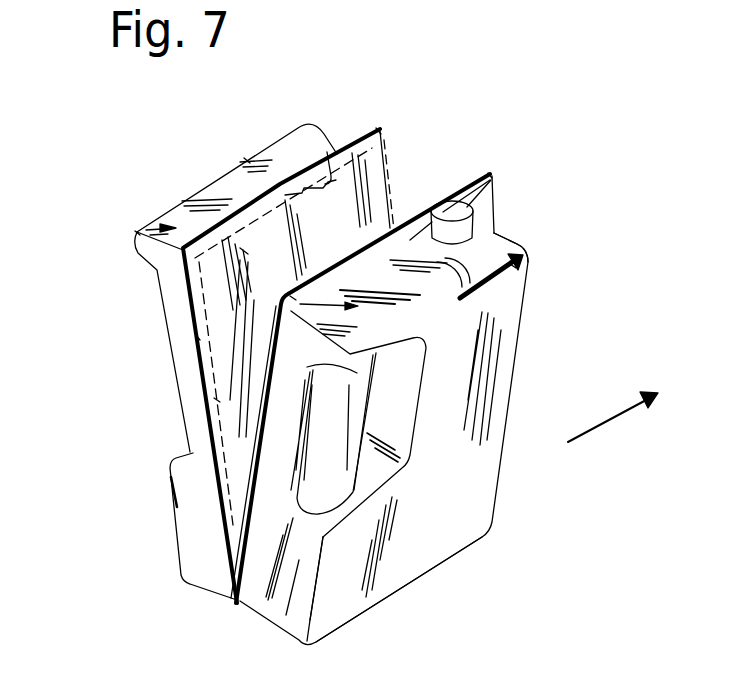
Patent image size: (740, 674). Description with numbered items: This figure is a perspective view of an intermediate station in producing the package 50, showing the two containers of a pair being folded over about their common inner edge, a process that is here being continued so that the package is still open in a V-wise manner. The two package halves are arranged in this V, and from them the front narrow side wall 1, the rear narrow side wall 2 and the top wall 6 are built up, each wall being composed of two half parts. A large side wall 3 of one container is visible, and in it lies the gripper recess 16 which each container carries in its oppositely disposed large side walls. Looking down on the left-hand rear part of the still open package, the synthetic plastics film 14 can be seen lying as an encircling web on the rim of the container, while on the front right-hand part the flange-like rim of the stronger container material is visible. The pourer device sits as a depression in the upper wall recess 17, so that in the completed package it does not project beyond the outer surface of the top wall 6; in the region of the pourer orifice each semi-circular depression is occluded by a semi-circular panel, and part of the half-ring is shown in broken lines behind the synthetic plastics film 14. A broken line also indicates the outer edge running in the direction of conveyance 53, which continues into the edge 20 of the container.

The front narrow side wall 1 is at (185, 578).
The rear narrow side wall 2 is at (337, 419).
The large side wall 3 is at (457, 432).
The top wall 6 is at (155, 262).
The synthetic plastics film 14 is at (243, 250).
The gripper recess 16 is at (350, 462).
The upper wall recess 17 is at (500, 241).
The edge 20 is at (218, 400).
The package 50 is at (399, 605).
The direction of conveyance 53 is at (617, 416).